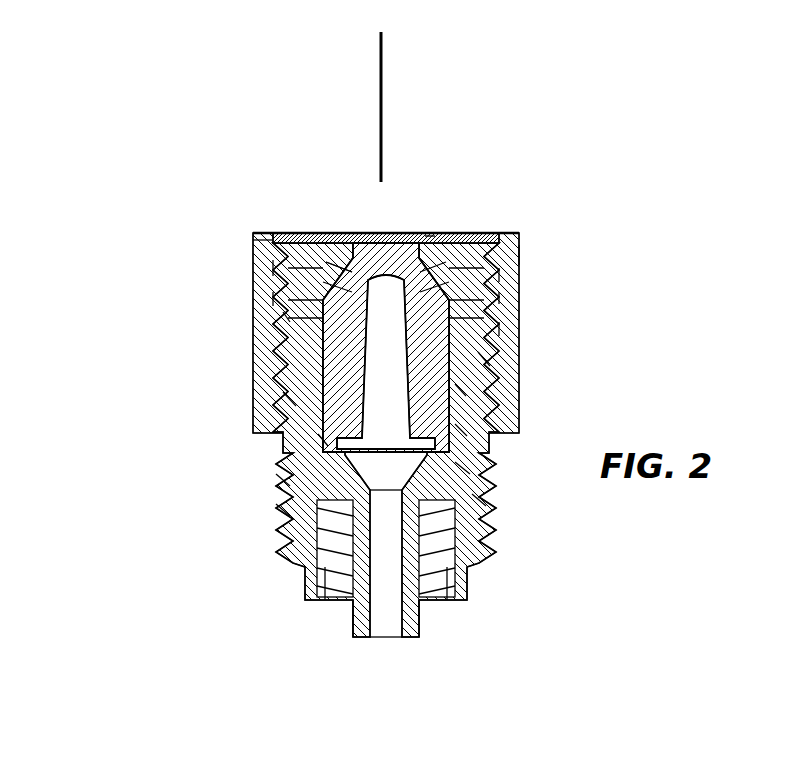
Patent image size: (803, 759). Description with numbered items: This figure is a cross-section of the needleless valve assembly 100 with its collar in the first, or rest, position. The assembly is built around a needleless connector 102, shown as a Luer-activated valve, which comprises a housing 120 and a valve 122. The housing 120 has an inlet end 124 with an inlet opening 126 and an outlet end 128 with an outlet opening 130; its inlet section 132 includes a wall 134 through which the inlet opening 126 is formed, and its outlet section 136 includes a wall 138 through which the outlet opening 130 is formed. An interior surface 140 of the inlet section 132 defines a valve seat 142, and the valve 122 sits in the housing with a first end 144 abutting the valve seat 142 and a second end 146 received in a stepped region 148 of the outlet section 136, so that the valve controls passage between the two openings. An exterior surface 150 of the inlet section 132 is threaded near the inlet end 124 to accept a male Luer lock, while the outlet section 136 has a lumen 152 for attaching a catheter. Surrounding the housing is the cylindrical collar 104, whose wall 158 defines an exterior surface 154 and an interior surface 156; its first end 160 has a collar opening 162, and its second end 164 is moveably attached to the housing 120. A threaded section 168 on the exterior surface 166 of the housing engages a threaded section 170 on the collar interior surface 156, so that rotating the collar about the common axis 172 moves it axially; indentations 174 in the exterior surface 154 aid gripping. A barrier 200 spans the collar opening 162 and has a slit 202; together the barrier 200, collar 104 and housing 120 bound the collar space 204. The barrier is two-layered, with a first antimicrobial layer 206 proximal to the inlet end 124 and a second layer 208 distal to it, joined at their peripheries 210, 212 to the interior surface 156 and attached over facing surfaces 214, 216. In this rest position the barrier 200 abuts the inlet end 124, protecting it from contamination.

The needleless valve assembly 100 is at (138, 83).
The needleless connector 102 is at (193, 545).
The collar 104 is at (608, 247).
The housing 120 is at (298, 415).
The valve 122 is at (352, 380).
The inlet end 124 is at (498, 275).
The inlet opening 126 is at (430, 234).
The outlet end 128 is at (418, 603).
The outlet opening 130 is at (390, 622).
The inlet section 132 is at (498, 330).
The wall 134 is at (484, 360).
The outlet section 136 is at (464, 468).
The wall 138 is at (478, 500).
The interior surface 140 is at (462, 390).
The valve seat 142 is at (499, 298).
The first end 144 is at (286, 318).
The second end 146 is at (318, 440).
The stepped region 148 is at (462, 430).
The exterior surface 150 is at (274, 268).
The lumen 152 is at (330, 574).
The exterior surface 154 is at (521, 256).
The interior surface 156 is at (490, 240).
The wall 158 is at (520, 240).
The first end 160 is at (158, 230).
The collar opening 162 is at (288, 233).
The second end 164 is at (163, 440).
The exterior surface 166 is at (280, 480).
The threaded section 168 is at (277, 510).
The threaded section 170 is at (292, 400).
The common axis 172 is at (383, 62).
The indentations 174 is at (278, 300).
The barrier 200 is at (344, 128).
The slit 202 is at (389, 238).
The space 204 is at (315, 270).
The first layer 206 is at (328, 240).
The second layer 208 is at (373, 240).
The periphery 210 is at (258, 238).
The periphery 212 is at (262, 233).
The facing surface 214 is at (472, 240).
The facing surface 216 is at (339, 267).